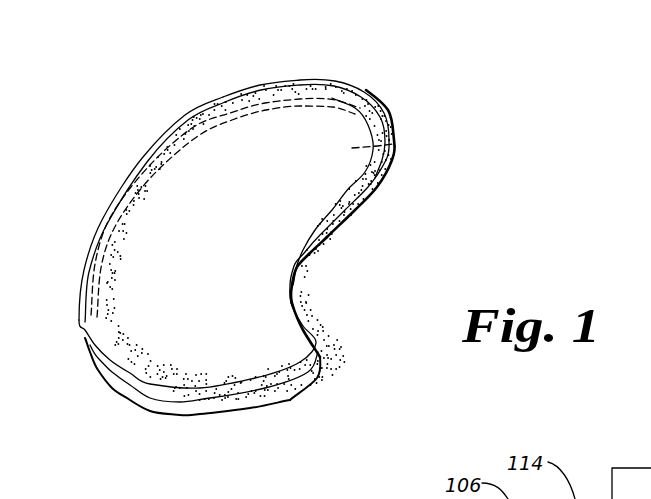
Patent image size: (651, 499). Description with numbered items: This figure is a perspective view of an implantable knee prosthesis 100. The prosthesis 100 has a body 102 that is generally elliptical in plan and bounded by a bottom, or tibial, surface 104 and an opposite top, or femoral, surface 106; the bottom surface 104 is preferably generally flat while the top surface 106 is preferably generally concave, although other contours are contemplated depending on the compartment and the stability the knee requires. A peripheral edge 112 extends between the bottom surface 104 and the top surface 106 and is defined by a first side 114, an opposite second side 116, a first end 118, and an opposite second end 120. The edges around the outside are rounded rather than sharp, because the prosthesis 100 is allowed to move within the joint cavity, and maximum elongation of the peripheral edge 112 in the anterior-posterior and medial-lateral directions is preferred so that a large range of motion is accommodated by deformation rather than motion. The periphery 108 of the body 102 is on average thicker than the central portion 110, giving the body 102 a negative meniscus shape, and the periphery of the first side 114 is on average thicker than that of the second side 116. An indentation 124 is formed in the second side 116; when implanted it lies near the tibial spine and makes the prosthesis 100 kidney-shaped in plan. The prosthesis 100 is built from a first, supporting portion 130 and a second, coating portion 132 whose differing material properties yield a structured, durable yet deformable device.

The implantable knee prosthesis 100 is at (170, 80).
The body 102 is at (327, 118).
The bottom surface 104 is at (394, 143).
The top surface 106 is at (248, 327).
The periphery 108 is at (222, 95).
The central portion 110 is at (220, 222).
The peripheral edge 112 is at (218, 416).
The first side 114 is at (113, 201).
The second side 116 is at (330, 231).
The first end 118 is at (327, 80).
The second end 120 is at (178, 420).
The indentation 124 is at (314, 257).
The supporting portion 130 is at (318, 370).
The coating portion 132 is at (267, 392).